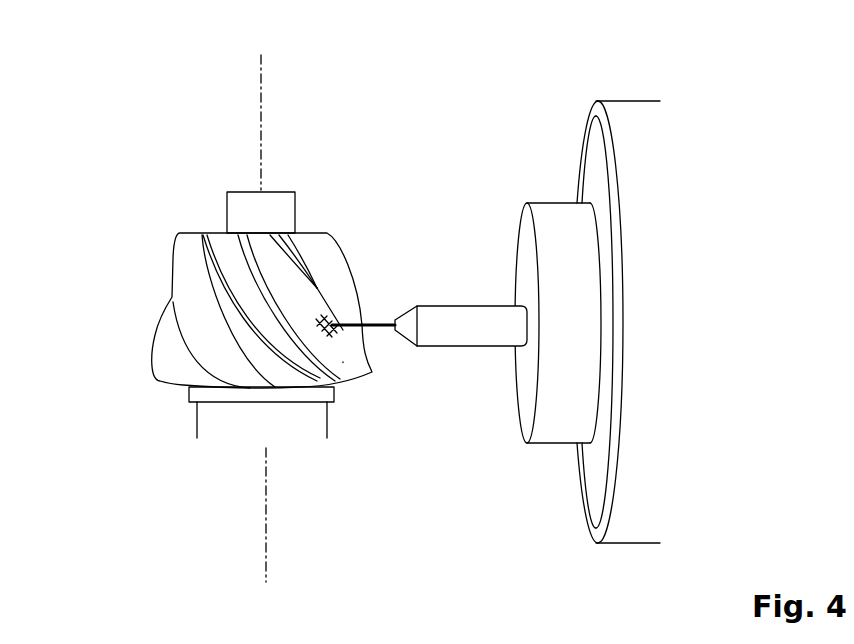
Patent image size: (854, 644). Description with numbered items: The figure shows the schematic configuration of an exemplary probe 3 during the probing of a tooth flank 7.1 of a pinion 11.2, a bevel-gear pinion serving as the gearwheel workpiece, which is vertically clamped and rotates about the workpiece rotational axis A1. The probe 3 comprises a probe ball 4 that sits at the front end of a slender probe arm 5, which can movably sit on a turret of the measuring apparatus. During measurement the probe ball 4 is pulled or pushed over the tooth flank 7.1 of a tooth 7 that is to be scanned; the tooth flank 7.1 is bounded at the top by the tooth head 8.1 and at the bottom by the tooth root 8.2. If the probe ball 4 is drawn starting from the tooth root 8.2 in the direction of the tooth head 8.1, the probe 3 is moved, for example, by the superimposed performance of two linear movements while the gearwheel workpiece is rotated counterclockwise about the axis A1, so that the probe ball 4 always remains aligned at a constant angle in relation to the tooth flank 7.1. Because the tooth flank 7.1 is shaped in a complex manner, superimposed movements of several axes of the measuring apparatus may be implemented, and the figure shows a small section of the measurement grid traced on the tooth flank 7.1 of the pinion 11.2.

The probe 3 is at (447, 172).
The probe ball 4 is at (328, 318).
The probe arm 5 is at (375, 323).
The tooth 7 is at (304, 271).
The tooth flank 7.1 is at (343, 330).
The tooth head 8.1 is at (343, 362).
The tooth root 8.2 is at (332, 370).
The pinion 11.2 is at (133, 245).
The workpiece rotational axis A1 is at (260, 306).